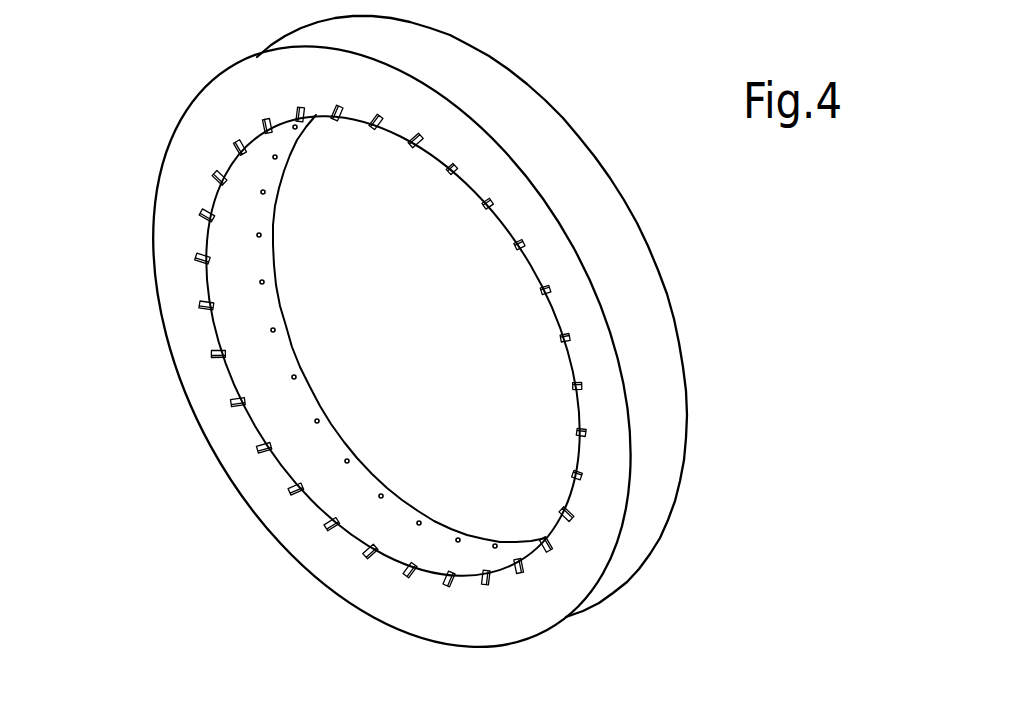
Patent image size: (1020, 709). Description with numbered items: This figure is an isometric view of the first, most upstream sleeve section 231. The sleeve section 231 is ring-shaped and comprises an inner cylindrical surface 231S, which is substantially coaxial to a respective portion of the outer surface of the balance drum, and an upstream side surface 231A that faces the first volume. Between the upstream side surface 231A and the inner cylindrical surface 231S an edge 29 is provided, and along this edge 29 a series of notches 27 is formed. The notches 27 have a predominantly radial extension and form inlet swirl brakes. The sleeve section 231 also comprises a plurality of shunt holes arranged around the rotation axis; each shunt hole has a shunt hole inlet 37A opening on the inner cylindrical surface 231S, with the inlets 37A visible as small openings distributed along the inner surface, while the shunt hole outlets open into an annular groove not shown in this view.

The first sleeve section 231 is at (592, 119).
The upstream side surface 231A is at (183, 190).
The inner cylindrical surface 231S is at (280, 342).
The edge 29 is at (420, 562).
The notches 27 is at (265, 451).
The shunt hole inlet 37A is at (259, 236).